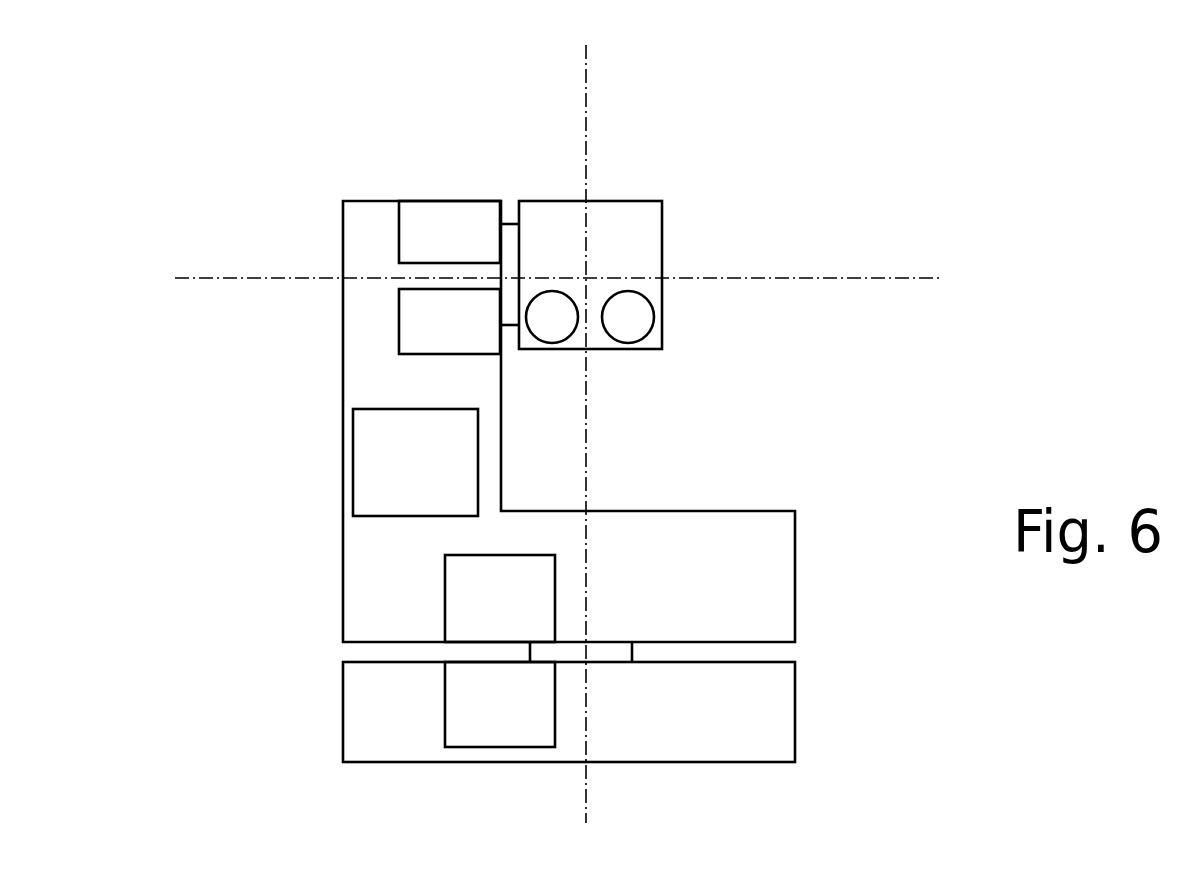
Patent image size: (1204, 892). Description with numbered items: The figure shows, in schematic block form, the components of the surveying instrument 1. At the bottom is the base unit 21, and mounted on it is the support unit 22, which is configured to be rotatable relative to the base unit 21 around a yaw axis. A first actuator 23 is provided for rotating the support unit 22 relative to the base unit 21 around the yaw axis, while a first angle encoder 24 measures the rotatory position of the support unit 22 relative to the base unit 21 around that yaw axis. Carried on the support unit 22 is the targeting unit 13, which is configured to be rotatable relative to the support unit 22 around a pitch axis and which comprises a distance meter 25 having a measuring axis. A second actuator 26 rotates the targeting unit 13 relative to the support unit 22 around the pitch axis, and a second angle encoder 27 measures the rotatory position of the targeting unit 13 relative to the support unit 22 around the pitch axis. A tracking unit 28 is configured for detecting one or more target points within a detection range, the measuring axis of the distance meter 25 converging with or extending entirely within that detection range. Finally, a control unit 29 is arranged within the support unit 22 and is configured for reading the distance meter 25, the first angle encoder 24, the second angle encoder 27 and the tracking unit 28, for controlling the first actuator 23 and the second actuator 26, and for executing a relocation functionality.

The surveying instrument 1 is at (320, 150).
The targeting unit 13 is at (652, 258).
The base unit 21 is at (757, 731).
The support unit 22 is at (757, 596).
The first actuator 23 is at (525, 726).
The first angle encoder 24 is at (525, 619).
The distance meter 25 is at (632, 320).
The second actuator 26 is at (474, 256).
The second angle encoder 27 is at (474, 344).
The tracking unit 28 is at (548, 325).
The control unit 29 is at (439, 491).